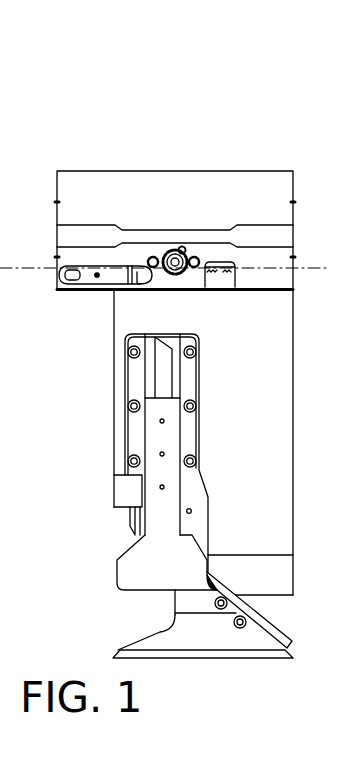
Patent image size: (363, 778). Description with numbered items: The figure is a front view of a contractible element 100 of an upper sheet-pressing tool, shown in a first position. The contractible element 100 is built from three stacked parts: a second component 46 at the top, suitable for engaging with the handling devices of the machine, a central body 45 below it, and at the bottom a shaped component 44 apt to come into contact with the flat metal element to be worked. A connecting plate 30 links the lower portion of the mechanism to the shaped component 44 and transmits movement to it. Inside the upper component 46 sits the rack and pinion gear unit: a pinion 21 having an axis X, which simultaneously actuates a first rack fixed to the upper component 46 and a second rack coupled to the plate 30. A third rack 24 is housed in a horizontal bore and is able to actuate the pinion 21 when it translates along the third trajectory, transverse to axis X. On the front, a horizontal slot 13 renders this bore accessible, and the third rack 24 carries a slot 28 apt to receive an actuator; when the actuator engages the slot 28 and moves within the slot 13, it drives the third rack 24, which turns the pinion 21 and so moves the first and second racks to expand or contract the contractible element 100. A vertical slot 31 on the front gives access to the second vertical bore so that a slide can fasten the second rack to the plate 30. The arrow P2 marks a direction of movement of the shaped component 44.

The contractible element 100 is at (112, 112).
The second component 46 is at (76, 200).
The slot 28 is at (137, 269).
The pinion 21 is at (182, 250).
The third rack 24 is at (220, 272).
The horizontal slot 13 is at (97, 291).
The vertical slot 31 is at (160, 379).
The central body 45 is at (120, 427).
The connecting plate 30 is at (127, 570).
The shaped component 44 is at (138, 644).
The direction P2 is at (152, 618).